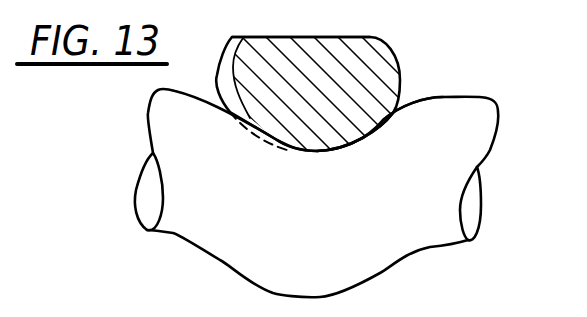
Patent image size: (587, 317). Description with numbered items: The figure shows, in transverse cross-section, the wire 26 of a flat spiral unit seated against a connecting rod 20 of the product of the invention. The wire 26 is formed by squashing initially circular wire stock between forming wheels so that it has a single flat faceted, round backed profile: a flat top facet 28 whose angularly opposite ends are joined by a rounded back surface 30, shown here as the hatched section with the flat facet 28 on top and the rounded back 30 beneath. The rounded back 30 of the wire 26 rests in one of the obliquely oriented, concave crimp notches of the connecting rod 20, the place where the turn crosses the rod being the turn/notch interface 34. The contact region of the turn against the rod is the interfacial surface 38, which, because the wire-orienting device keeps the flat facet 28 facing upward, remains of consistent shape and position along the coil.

The connecting rod 20 is at (425, 240).
The wire 26 is at (393, 46).
The flat top facet 28 is at (338, 36).
The rounded back surface 30 is at (307, 153).
The turn/notch interface 34 is at (342, 149).
The interfacial surface 38 is at (406, 98).